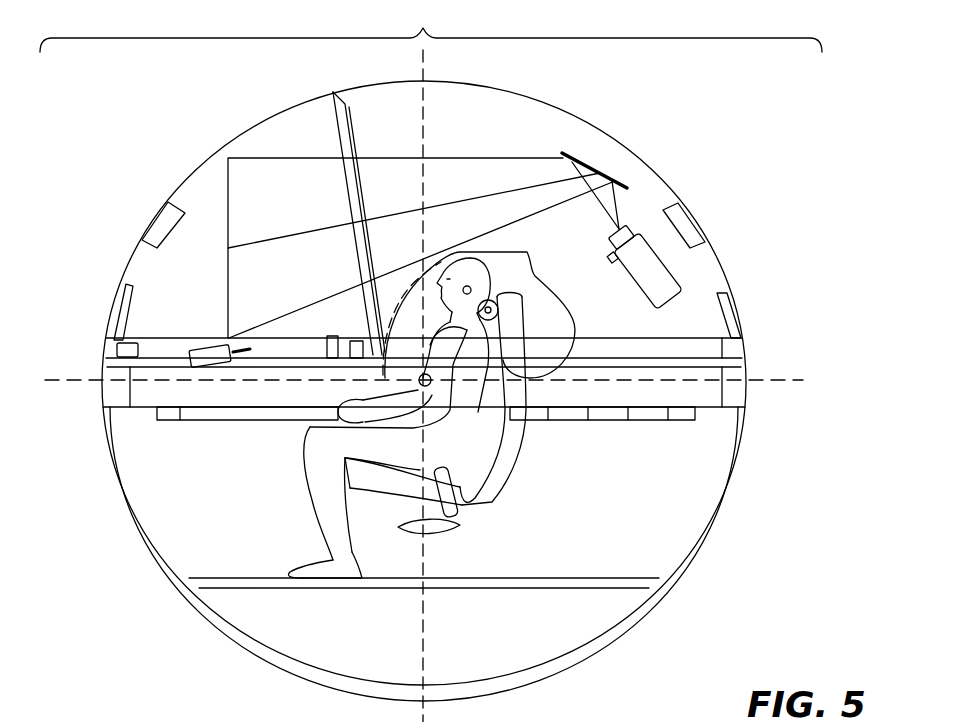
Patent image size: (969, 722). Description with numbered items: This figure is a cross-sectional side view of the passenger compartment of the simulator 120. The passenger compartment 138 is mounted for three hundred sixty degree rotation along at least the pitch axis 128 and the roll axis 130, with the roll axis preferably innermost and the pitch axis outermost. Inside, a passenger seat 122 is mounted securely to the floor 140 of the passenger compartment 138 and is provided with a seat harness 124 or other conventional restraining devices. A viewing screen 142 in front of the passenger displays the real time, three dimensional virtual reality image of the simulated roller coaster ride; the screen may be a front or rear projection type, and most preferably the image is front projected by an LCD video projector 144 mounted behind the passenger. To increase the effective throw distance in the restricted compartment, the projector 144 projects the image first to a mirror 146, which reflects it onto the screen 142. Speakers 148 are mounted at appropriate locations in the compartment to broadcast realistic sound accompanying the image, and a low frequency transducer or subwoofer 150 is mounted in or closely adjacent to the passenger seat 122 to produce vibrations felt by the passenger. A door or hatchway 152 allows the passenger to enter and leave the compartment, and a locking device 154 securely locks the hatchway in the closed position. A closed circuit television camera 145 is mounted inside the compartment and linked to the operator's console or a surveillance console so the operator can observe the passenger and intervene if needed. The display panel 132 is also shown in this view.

The simulator 120 is at (431, 26).
The passenger seat 122 is at (490, 458).
The seat harness 124 is at (560, 303).
The pitch axis 128 is at (418, 386).
The roll axis 130 is at (760, 380).
The display panel 132 is at (426, 75).
The passenger compartment 138 is at (679, 504).
The floor 140 is at (265, 577).
The viewing screen 142 is at (424, 289).
The LCD video projector 144 is at (668, 283).
The closed circuit television camera 145 is at (203, 367).
The mirror 146 is at (596, 172).
The speakers 148 is at (162, 223).
The low frequency transducer or subwoofer 150 is at (440, 535).
The door or hatchway 152 is at (296, 100).
The locking device 154 is at (115, 313).